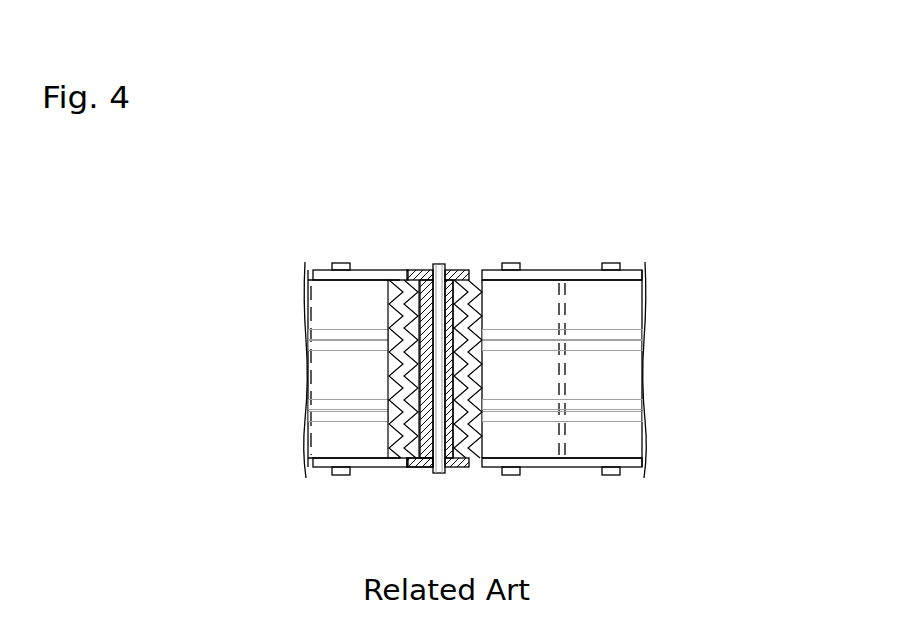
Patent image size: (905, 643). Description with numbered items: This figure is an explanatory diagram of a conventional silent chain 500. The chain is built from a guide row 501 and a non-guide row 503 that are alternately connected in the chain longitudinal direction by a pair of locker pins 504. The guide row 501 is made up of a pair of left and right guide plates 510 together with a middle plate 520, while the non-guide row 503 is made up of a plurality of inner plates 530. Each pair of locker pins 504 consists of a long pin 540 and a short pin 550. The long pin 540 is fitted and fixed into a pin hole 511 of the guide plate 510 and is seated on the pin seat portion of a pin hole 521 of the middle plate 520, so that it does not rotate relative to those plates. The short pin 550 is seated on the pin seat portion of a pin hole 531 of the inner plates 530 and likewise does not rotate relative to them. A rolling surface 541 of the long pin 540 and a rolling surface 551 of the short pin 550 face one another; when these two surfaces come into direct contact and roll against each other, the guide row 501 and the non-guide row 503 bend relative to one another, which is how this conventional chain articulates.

The silent chain 500 is at (282, 217).
The guide row 501 is at (197, 265).
The non-guide row 503 is at (737, 320).
The locker pins 504 is at (458, 211).
The guide plate 510 is at (308, 275).
The middle plate 520 is at (337, 323).
The inner plates 530 is at (631, 332).
The long pin 540 is at (438, 265).
The short pin 550 is at (422, 285).
The rolling surface of the short pin 551 is at (428, 350).
The pin hole of the guide plate 511 is at (448, 268).
The rolling surface of the long pin 541 is at (437, 345).
The pin hole of the middle plate 521 is at (417, 452).
The pin hole of the inner plates 531 is at (452, 452).